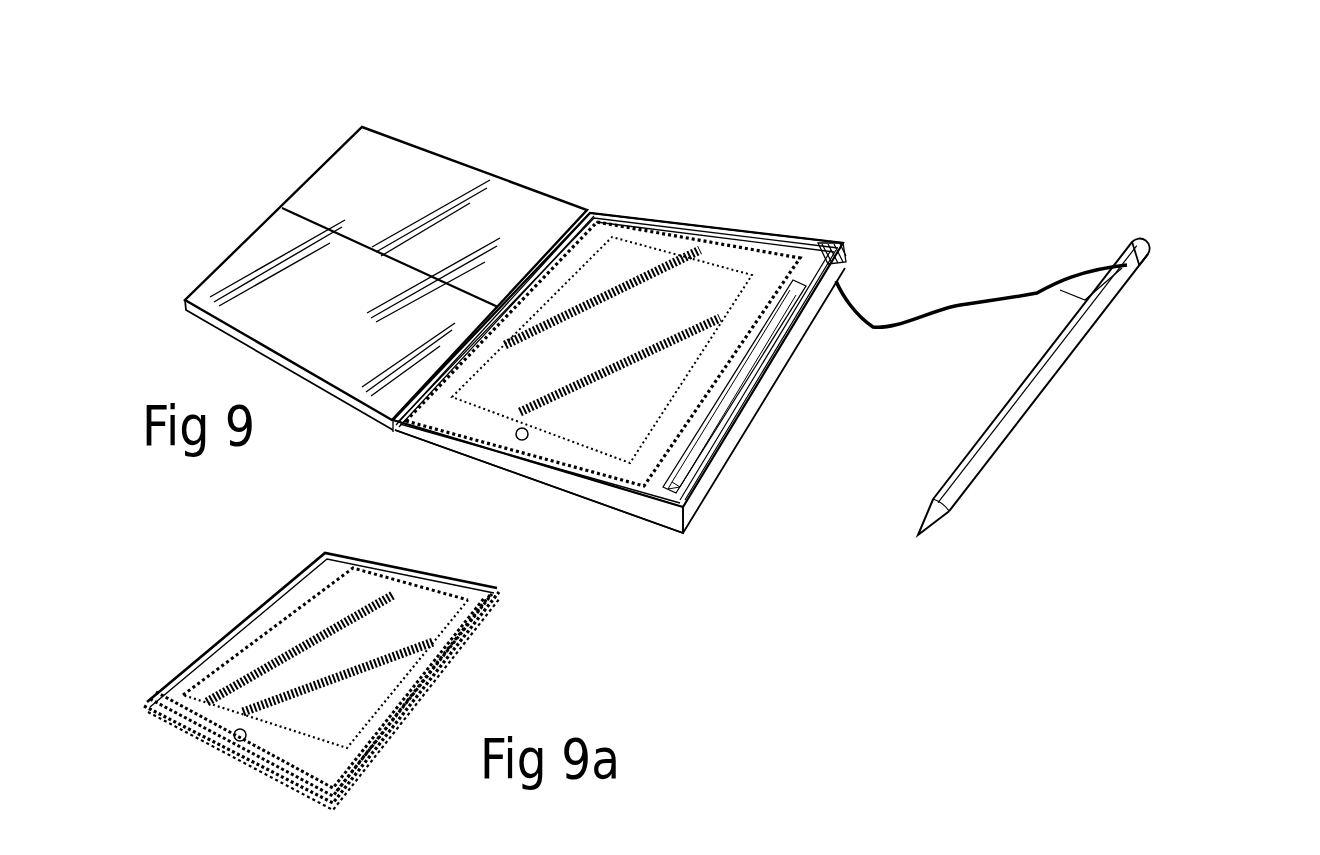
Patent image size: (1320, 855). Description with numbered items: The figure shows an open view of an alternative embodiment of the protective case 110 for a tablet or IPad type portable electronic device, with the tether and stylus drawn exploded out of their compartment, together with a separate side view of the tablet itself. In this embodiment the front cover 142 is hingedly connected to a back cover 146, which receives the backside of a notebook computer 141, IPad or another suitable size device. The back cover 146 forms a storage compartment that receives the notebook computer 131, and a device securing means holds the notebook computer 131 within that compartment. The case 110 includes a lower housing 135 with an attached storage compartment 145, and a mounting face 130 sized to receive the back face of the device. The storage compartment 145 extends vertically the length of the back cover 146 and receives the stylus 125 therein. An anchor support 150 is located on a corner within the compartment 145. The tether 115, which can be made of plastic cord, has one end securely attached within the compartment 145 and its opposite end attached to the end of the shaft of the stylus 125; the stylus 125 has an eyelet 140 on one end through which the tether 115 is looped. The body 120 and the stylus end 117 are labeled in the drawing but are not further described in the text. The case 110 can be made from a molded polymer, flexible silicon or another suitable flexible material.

In FIG. 9, the protective case 110 is at (526, 156).
In FIG. 9, the front cover 142 is at (340, 190).
In FIG. 9, the base housing 120 is at (840, 277).
In FIG. 9, the notebook computer 131 is at (687, 230).
In FIG. 9, the notebook computer 141 is at (793, 237).
In FIG. 9, the lower housing 135 is at (543, 470).
In FIG. 9, the back cover 146 is at (650, 510).
In FIG. 9, the storage compartment 145 is at (393, 423).
In FIG. 9, the anchor support 150 is at (828, 265).
In FIG. 9, the mounting face 130 is at (747, 253).
In FIG. 9A, the mounting face 130 is at (322, 681).
In FIG. 9, the stylus 125 is at (727, 428).
In FIG. 9, the tether 115 is at (1047, 273).
In FIG. 9, the eyelet 140 is at (1087, 300).
In FIG. 9, the stylus end cap 117 is at (1144, 251).